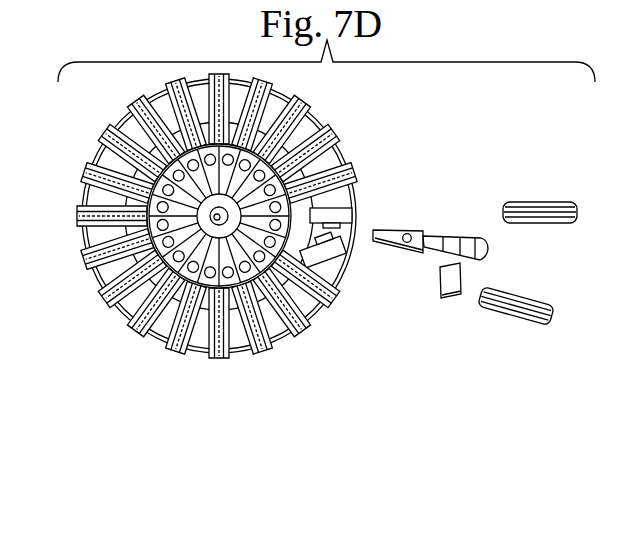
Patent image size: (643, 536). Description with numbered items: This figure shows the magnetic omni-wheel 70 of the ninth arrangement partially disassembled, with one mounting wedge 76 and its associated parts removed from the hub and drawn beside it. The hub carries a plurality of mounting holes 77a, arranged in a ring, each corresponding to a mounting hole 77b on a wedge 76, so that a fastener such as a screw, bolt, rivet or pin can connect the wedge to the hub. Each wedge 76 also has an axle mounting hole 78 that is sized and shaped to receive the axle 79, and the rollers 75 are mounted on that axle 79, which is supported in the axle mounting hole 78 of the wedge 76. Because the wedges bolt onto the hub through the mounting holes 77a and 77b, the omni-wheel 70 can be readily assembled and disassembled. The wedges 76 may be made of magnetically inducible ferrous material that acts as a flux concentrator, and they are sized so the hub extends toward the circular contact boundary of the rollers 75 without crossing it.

The omni-wheel 70 is at (365, 112).
The rollers 75 is at (556, 202).
The mounting wedge 76 is at (424, 228).
The mounting holes 77a is at (306, 290).
The mounting hole 77b is at (403, 233).
The axle mounting hole 78 is at (466, 262).
The axle 79 is at (440, 285).